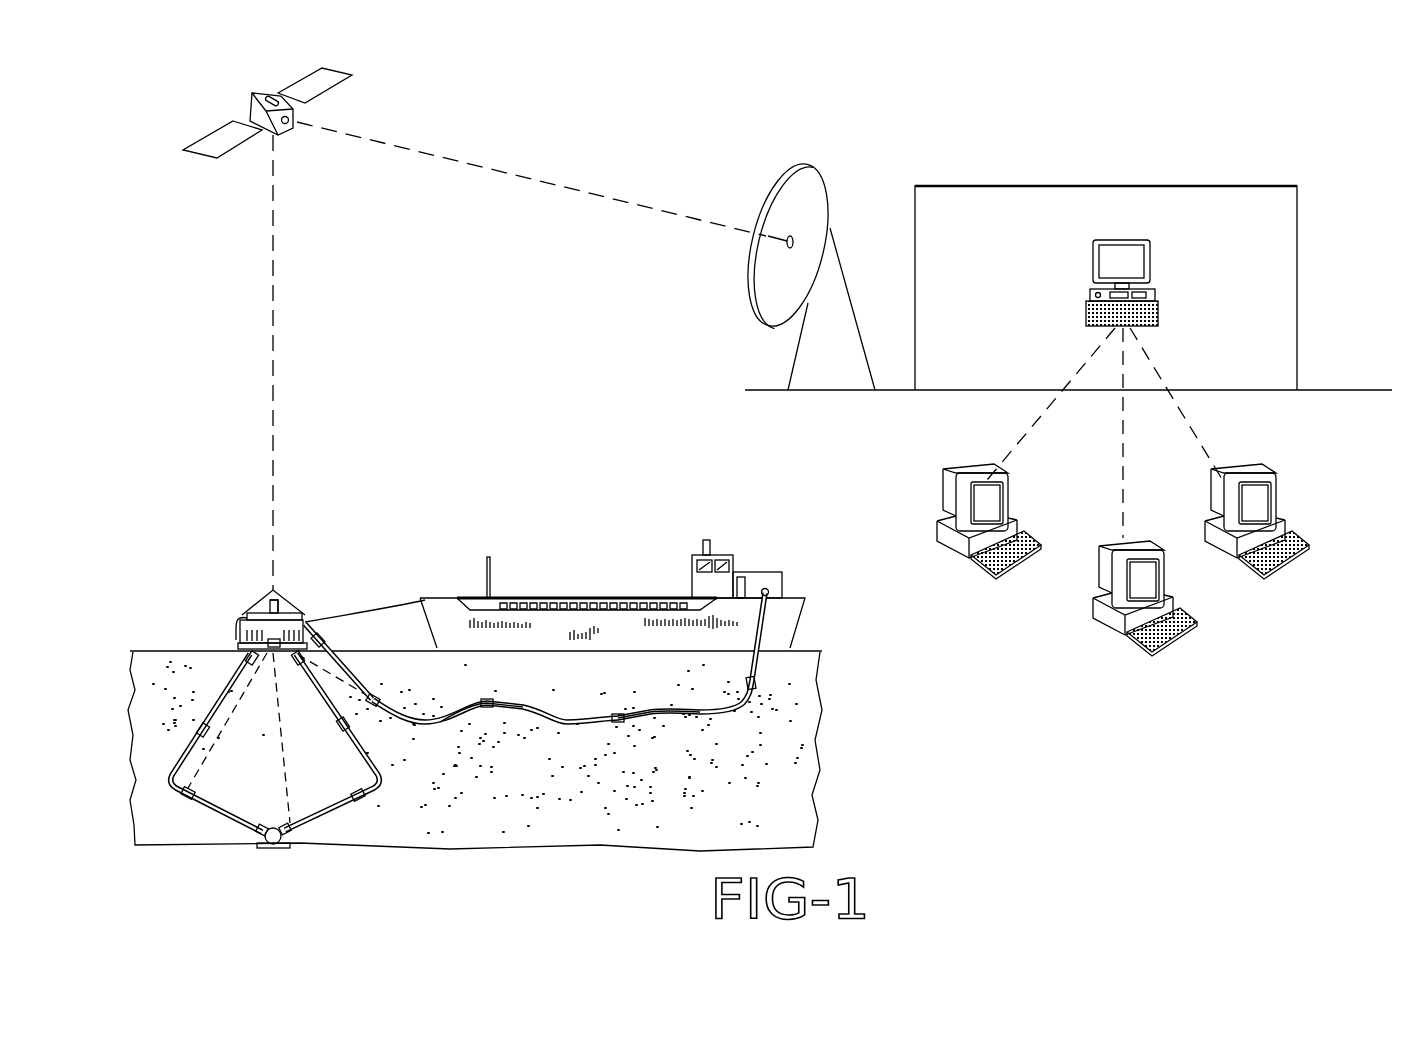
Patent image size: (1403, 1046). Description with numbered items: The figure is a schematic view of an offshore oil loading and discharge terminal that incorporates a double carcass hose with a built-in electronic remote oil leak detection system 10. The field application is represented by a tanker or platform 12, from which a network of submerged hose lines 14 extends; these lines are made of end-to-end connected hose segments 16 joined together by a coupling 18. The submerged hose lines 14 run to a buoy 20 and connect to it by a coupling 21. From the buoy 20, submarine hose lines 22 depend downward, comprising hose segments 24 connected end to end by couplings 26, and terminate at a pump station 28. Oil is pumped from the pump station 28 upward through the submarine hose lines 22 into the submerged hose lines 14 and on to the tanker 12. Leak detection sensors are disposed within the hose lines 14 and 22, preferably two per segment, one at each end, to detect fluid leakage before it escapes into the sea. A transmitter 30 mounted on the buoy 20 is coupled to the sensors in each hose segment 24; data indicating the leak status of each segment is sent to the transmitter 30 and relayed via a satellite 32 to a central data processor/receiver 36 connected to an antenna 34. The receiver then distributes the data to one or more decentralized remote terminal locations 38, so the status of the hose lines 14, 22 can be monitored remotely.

The electronic remote oil leak detection system 10 is at (675, 168).
The tanker or platform 12 is at (797, 593).
The submerged hose lines 14 is at (750, 708).
The hose segments 16 is at (672, 710).
The coupling 18 is at (487, 705).
The buoy 20 is at (255, 632).
The coupling 21 is at (312, 620).
The submarine hose lines 22 is at (177, 773).
The hose segments 24 is at (338, 808).
The couplings 26 is at (188, 790).
The pump station 28 is at (273, 843).
The transmitter 30 is at (278, 602).
The satellite 32 is at (262, 110).
The antenna 34 is at (817, 182).
The central data processor/receiver 36 is at (1127, 267).
The remote terminal locations 38 is at (1017, 566).